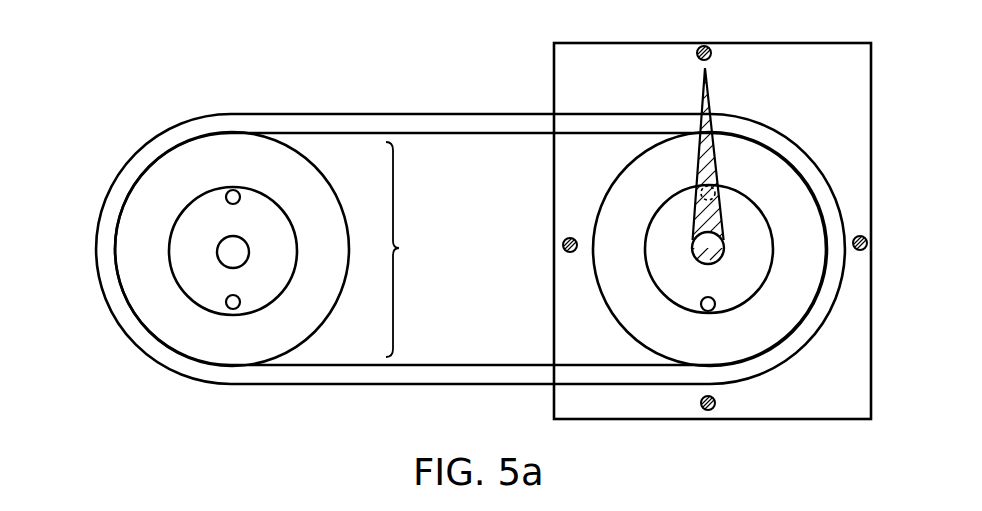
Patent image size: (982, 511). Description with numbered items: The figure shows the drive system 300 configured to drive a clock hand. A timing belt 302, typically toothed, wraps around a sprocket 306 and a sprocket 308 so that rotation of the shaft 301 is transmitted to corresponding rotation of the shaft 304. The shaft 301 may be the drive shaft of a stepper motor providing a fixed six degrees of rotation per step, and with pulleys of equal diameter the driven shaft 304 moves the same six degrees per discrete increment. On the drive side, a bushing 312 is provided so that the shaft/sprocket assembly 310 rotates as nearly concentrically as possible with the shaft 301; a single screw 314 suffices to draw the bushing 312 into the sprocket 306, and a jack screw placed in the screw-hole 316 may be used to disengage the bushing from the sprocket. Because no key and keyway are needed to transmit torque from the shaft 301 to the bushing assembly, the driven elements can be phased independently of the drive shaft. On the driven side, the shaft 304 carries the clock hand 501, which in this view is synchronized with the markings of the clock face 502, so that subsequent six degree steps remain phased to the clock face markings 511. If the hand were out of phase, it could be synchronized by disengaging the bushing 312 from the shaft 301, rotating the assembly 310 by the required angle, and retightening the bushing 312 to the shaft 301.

The drive system 300 is at (105, 155).
The shaft 301 is at (218, 249).
The timing belt 302 is at (452, 120).
The shaft 304 is at (725, 250).
The sprocket 306 is at (327, 197).
The sprocket 308 is at (627, 320).
The shaft/sprocket assembly 310 is at (416, 249).
The bushing 312 is at (245, 230).
The screw 314 is at (228, 191).
The screw-hole 316 is at (233, 310).
The clock hand 501 is at (778, 186).
The clock face 502 is at (853, 82).
The clock face markings 511 is at (707, 45).